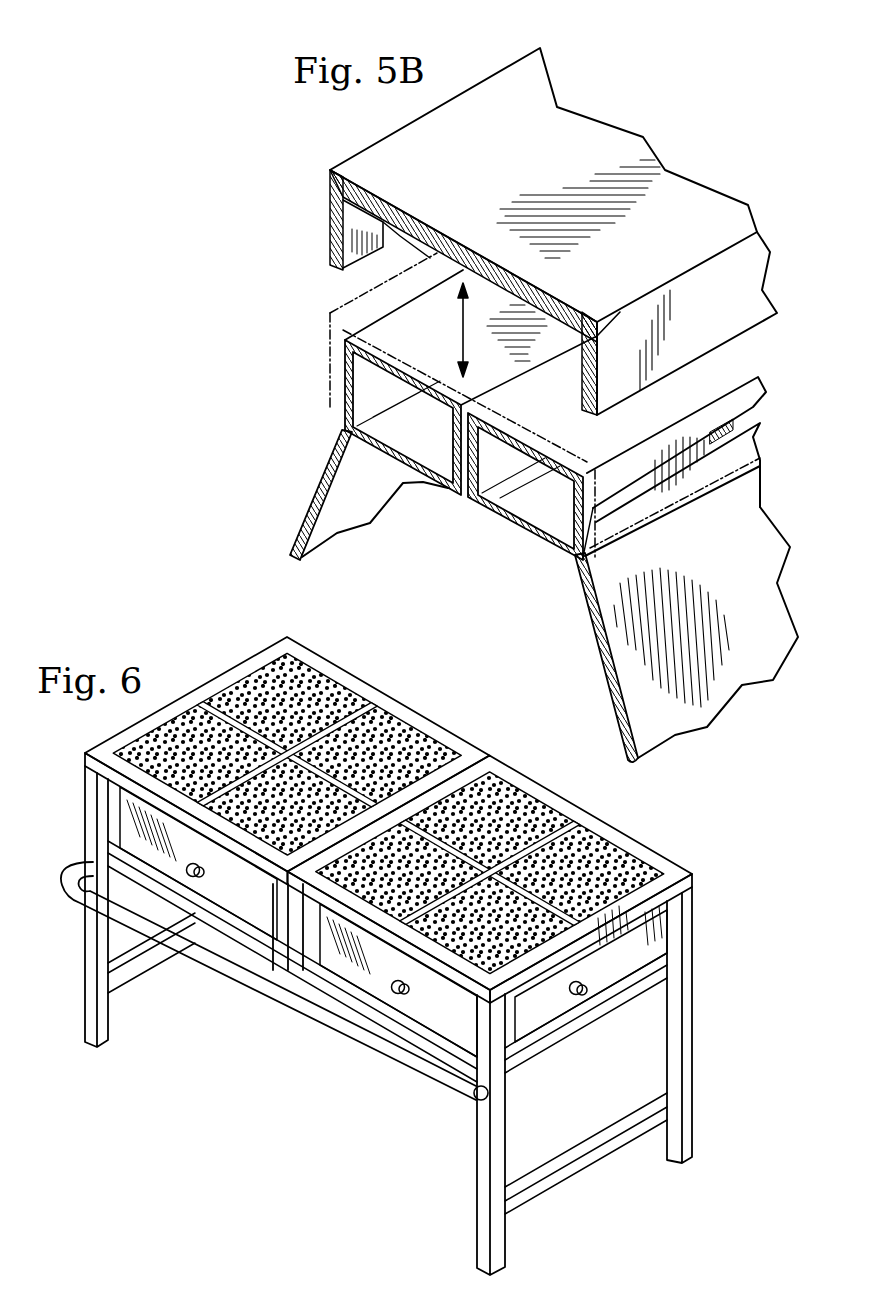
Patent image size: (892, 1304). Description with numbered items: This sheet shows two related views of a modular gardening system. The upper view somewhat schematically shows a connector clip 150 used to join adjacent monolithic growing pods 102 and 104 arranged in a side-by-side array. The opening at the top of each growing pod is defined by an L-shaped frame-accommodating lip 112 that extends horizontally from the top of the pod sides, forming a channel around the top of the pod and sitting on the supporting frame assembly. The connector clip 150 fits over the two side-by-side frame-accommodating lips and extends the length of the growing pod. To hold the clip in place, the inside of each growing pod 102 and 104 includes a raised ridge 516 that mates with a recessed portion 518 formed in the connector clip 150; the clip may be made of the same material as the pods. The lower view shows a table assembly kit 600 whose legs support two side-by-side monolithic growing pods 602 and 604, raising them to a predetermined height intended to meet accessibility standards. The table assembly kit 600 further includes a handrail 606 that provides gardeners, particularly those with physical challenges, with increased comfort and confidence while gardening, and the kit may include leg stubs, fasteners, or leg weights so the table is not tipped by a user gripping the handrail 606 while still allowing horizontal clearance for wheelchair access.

In FIG. 5B, the connector clip 150 is at (585, 130).
In FIG. 5B, the recessed portion 518 is at (345, 230).
In FIG. 5B, the frame-accommodating lip 112 is at (717, 377).
In FIG. 5B, the raised ridge 516 is at (757, 417).
In FIG. 5B, the monolithic growing pod 102 is at (308, 522).
In FIG. 5B, the monolithic growing pod 104 is at (777, 622).
In FIG. 6, the table assembly kit 600 is at (743, 1007).
In FIG. 6, the monolithic growing pod 602 is at (325, 667).
In FIG. 6, the monolithic growing pod 604 is at (515, 777).
In FIG. 6, the handrail 606 is at (310, 1032).